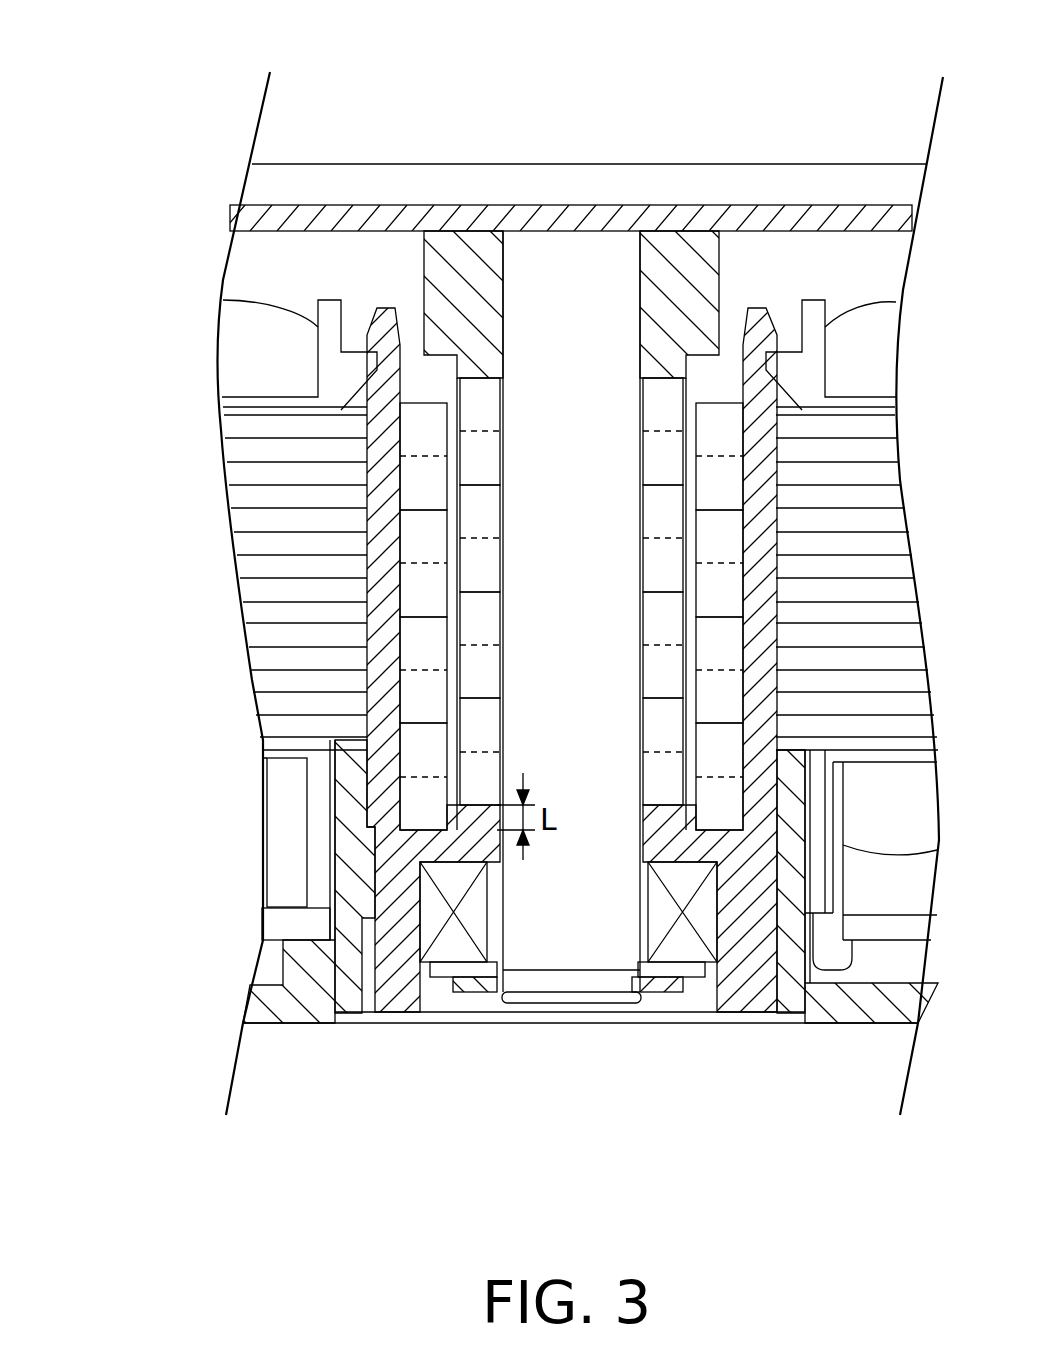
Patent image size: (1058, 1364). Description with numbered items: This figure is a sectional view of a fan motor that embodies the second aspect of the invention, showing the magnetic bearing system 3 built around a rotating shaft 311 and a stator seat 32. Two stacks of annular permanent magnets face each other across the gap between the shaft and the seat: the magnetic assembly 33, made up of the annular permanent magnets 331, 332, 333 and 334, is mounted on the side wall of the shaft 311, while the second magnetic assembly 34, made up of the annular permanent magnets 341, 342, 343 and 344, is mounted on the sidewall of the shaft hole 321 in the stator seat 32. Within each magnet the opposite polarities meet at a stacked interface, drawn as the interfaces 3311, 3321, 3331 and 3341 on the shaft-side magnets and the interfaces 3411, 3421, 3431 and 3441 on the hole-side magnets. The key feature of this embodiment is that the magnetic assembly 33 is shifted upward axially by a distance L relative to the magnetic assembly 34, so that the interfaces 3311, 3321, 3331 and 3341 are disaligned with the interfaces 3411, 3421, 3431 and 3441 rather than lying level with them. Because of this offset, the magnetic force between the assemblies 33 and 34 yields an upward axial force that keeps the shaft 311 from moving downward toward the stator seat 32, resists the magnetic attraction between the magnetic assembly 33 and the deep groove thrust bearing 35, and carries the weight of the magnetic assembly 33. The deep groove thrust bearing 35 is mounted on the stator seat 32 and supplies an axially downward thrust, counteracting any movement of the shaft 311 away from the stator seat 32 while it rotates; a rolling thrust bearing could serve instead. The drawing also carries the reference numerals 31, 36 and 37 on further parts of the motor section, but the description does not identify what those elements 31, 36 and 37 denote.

The magnetic bearing system 3 is at (745, 80).
The housing 31 is at (807, 204).
The shaft 311 is at (572, 257).
The stator seat 32 is at (360, 969).
The shaft hole 321 is at (668, 822).
The magnetic assembly 33 is at (571, 449).
The annular permanent magnet 331 is at (545, 431).
The stacked interface 3311 is at (503, 433).
The annular permanent magnet 332 is at (545, 538).
The stacked interface 3321 is at (503, 538).
The annular permanent magnet 333 is at (545, 645).
The stacked interface 3331 is at (503, 645).
The annular permanent magnet 334 is at (545, 751).
The stacked interface 3341 is at (503, 750).
The second magnetic assembly 34 is at (408, 461).
The annular permanent magnet 341 is at (260, 455).
The stacked interface 3411 is at (260, 461).
The annular permanent magnet 342 is at (260, 562).
The stacked interface 3421 is at (398, 530).
The annular permanent magnet 343 is at (260, 669).
The stacked interface 3431 is at (260, 675).
The annular permanent magnet 344 is at (260, 775).
The stacked interface 3441 is at (260, 781).
The deep groove thrust bearing 35 is at (420, 957).
The thrust pad 36 is at (660, 992).
The thrust plate 37 is at (693, 975).